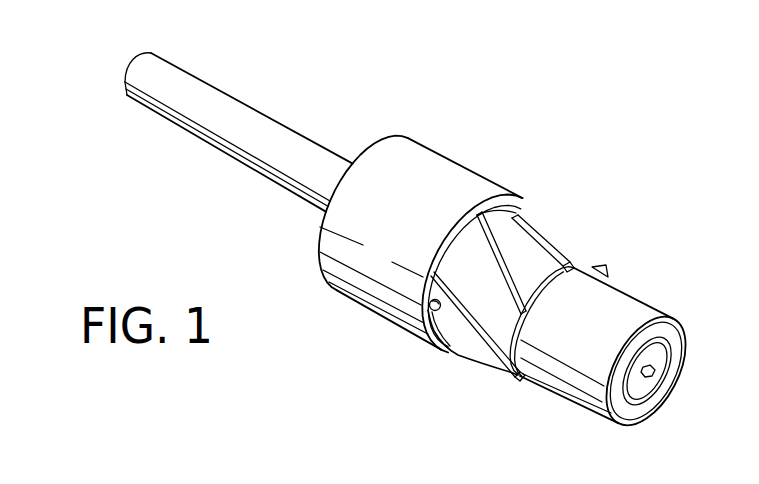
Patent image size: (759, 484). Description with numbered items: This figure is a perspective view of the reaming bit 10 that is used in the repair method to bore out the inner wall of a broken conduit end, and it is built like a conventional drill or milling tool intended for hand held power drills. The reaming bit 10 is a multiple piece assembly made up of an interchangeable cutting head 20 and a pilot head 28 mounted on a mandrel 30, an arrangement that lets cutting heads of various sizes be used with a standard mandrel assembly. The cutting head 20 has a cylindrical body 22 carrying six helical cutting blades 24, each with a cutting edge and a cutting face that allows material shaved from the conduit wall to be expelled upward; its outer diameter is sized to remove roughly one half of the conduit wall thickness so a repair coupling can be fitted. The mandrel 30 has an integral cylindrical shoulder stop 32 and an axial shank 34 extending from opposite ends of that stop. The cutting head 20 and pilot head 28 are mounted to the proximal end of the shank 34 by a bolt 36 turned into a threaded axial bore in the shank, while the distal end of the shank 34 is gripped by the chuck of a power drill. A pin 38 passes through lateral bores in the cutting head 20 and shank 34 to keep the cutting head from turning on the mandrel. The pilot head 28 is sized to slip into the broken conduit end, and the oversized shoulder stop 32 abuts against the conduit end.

The reaming bit 10 is at (262, 230).
The cutting head 20 is at (478, 358).
The cylindrical body 22 is at (525, 267).
The helical cutting blades 24 is at (548, 222).
The pilot head 28 is at (620, 302).
The mandrel 30 is at (357, 312).
The shoulder stop 32 is at (440, 152).
The shank 34 is at (230, 148).
The bolt 36 is at (659, 377).
The pin 38 is at (428, 307).